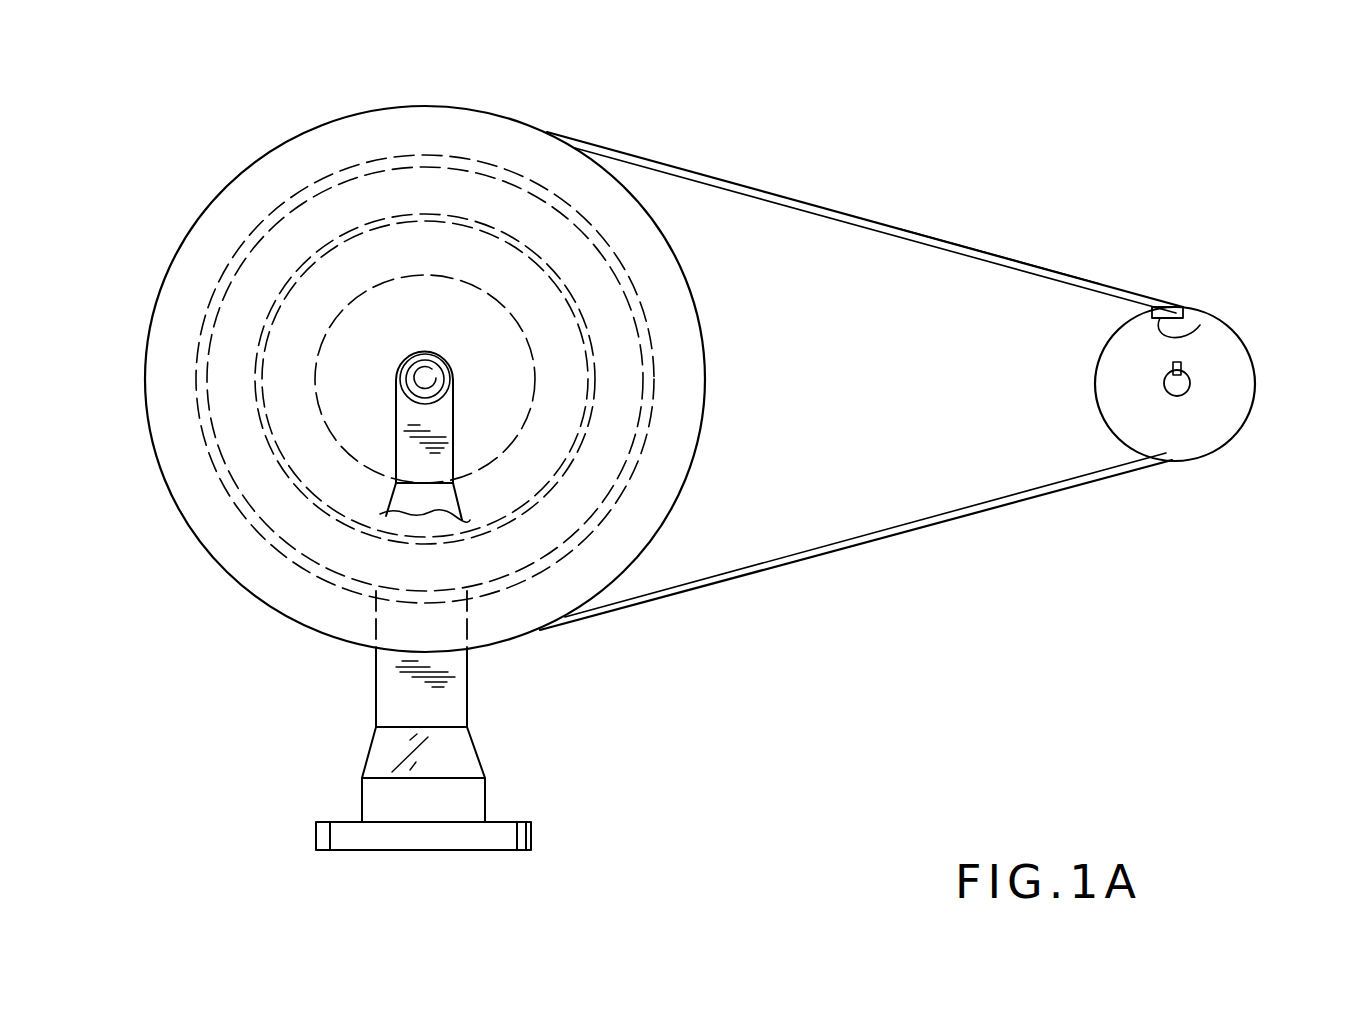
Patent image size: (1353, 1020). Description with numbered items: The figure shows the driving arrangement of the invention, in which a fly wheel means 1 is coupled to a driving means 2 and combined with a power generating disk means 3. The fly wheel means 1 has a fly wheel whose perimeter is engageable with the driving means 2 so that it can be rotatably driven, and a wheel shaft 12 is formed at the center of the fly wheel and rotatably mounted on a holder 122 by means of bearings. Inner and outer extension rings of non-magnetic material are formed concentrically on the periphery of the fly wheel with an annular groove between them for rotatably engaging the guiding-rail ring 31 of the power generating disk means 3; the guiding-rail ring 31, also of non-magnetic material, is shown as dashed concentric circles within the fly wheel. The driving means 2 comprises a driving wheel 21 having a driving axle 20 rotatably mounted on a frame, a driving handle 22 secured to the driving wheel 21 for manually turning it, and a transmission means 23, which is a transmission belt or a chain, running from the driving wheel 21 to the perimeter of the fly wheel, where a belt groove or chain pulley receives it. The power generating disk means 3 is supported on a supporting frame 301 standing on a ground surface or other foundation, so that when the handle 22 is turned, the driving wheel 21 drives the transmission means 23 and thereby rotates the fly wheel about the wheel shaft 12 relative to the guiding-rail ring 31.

The fly wheel means 1 is at (512, 158).
The wheel shaft 12 is at (418, 372).
The holder 122 is at (412, 500).
The guiding-rail ring 31 is at (227, 328).
The driving means 2 is at (813, 205).
The transmission means 23 is at (947, 240).
The driving handle 22 is at (1196, 330).
The driving wheel 21 is at (1232, 356).
The driving axle 20 is at (1180, 385).
The power generating disk means 3 is at (372, 695).
The supporting frame 301 is at (465, 762).